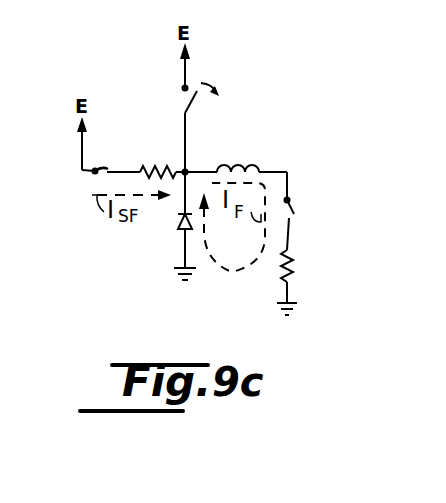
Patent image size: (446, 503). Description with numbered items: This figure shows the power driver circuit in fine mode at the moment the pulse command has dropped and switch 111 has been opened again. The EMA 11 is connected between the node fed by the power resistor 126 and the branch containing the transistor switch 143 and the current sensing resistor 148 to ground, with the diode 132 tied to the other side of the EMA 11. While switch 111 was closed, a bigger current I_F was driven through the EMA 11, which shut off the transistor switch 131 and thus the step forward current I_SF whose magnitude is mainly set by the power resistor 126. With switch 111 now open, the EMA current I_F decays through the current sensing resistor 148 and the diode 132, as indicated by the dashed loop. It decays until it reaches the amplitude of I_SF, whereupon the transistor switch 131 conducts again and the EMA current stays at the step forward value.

The EMA 11 is at (242, 164).
The switch 111 is at (198, 97).
The power resistor 126 is at (153, 168).
The transistor switch 131 is at (105, 175).
The diode 132 is at (178, 218).
The transistor switch 143 is at (292, 216).
The current sensing resistor 148 is at (291, 270).